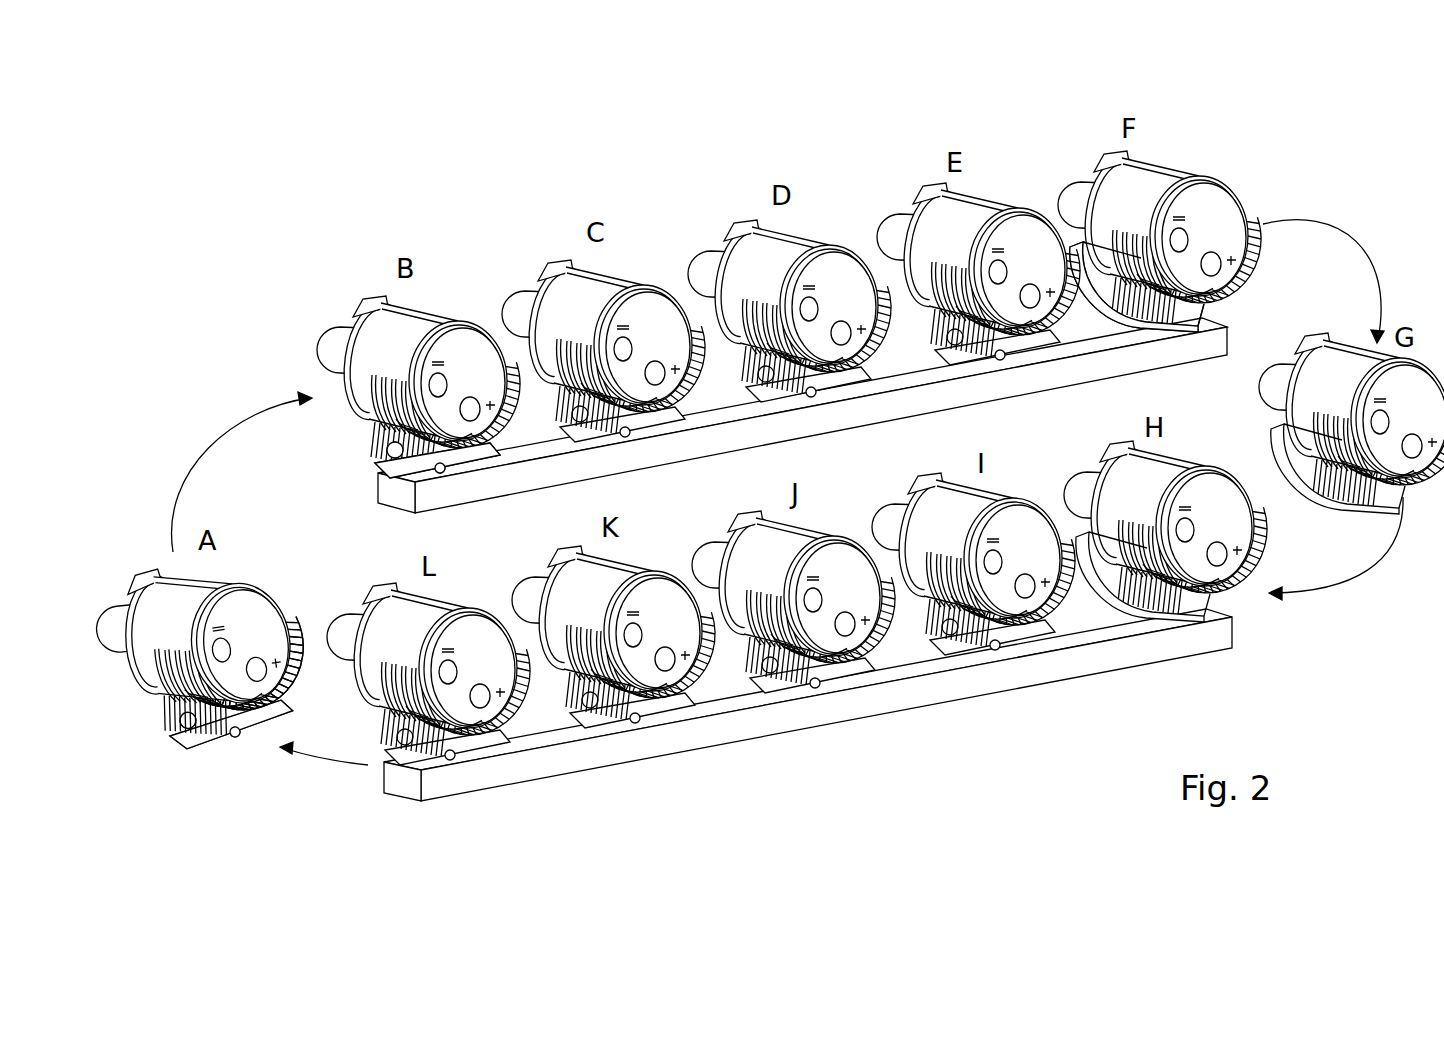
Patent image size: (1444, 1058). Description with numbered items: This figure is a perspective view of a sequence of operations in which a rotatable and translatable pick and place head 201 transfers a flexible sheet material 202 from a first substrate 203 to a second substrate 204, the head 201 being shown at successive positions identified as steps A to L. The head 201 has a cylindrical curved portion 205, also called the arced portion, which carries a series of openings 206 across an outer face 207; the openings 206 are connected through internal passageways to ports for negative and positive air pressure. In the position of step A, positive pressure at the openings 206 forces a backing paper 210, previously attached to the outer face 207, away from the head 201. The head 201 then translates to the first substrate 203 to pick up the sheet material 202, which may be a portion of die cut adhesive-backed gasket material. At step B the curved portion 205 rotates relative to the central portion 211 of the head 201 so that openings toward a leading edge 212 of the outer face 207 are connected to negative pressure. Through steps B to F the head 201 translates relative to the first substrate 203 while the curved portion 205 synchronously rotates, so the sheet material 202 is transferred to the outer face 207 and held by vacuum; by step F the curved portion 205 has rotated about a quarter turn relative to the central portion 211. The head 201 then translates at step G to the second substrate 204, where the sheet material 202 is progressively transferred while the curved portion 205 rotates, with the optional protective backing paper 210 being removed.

The pick and place head 201 is at (231, 649).
The flexible sheet material 202 is at (1100, 290).
The first substrate 203 is at (442, 495).
The second substrate 204 is at (577, 757).
The cylindrical curved portion 205 is at (1193, 318).
The openings 206 is at (303, 637).
The outer face 207 is at (483, 462).
The backing paper 210 is at (250, 742).
The central portion 211 is at (1088, 198).
The leading edge 212 is at (400, 467).